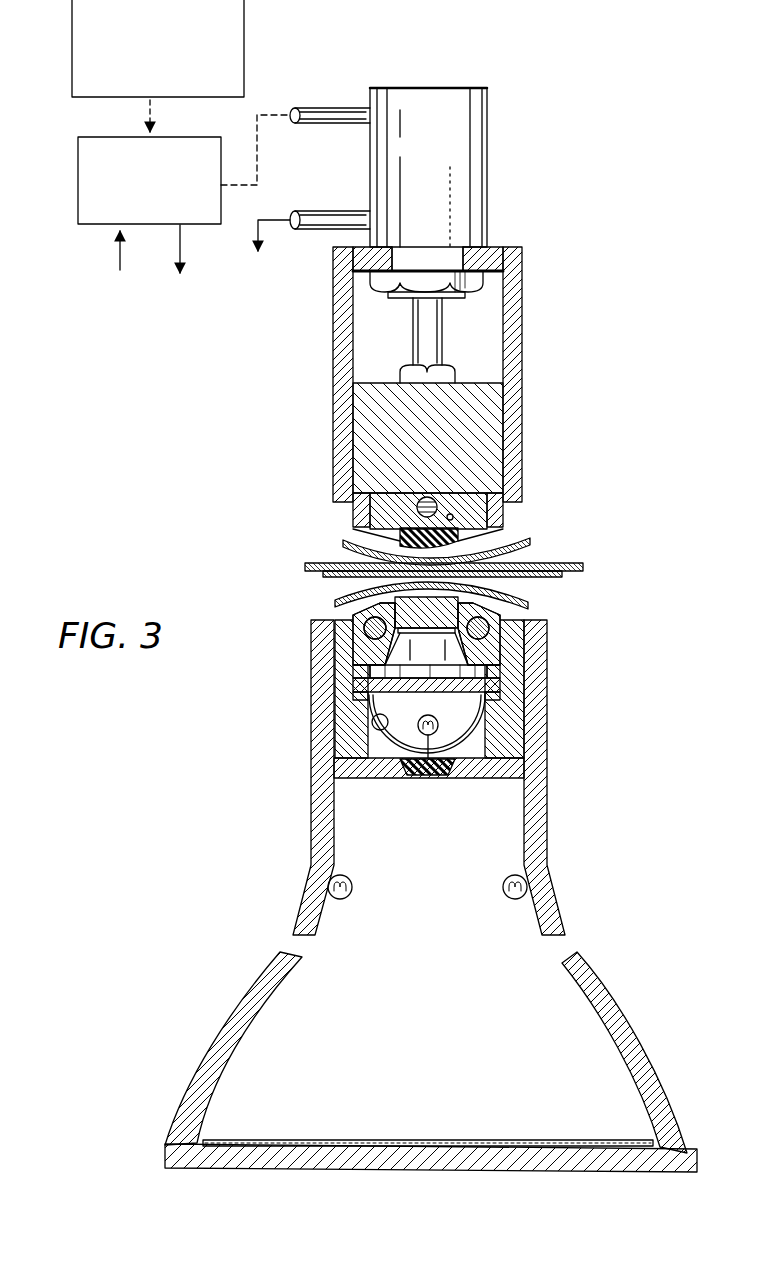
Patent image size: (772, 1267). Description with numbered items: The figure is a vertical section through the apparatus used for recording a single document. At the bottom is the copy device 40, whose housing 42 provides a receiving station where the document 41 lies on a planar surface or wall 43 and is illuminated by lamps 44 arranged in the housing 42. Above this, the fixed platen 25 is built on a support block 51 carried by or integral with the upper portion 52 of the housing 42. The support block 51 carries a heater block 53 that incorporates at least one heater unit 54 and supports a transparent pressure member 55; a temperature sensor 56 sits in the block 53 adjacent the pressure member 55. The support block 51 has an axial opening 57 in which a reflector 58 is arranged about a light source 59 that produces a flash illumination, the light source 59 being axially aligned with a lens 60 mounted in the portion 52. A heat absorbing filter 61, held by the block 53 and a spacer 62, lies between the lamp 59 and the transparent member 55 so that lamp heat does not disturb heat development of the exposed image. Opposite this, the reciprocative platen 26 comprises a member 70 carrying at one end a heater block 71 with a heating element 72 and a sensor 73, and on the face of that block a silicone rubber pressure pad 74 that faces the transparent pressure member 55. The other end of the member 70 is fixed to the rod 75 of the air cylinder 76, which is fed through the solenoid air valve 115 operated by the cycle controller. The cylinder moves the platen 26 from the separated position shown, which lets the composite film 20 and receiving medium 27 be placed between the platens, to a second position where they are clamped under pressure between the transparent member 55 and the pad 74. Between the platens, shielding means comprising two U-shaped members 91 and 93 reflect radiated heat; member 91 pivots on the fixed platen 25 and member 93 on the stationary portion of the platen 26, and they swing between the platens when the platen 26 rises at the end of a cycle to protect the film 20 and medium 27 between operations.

The solenoid air valve 115 is at (78, 186).
The air cylinder 76 is at (478, 142).
The reciprocative platen 26 is at (406, 406).
The rod 75 is at (432, 328).
The member 70 is at (482, 420).
The heater block 71 is at (342, 488).
The heating element 72 is at (348, 508).
The sensor 73 is at (454, 517).
The pressure pad 74 is at (345, 534).
The U-shaped member 93 is at (535, 545).
The receiving medium 27 is at (565, 561).
The U-shaped member 91 is at (525, 601).
The composite film 20 is at (435, 561).
The fixed platen 25 is at (427, 766).
The support block 51 is at (515, 735).
The upper portion 52 is at (325, 720).
The heater block 53 is at (335, 637).
The heater unit 54 is at (345, 612).
The transparent pressure member 55 is at (520, 607).
The spacer 62 is at (345, 665).
The temperature sensor 56 is at (525, 680).
The heat absorbing filter 61 is at (500, 700).
The axial opening 57 is at (365, 782).
The reflector 58 is at (330, 735).
The light source 59 is at (422, 782).
The lens 60 is at (455, 782).
The copy device 40 is at (431, 1022).
The housing 42 is at (305, 885).
The lamps 44 is at (353, 880).
The planar surface 43 is at (516, 1163).
The document 41 is at (430, 1140).